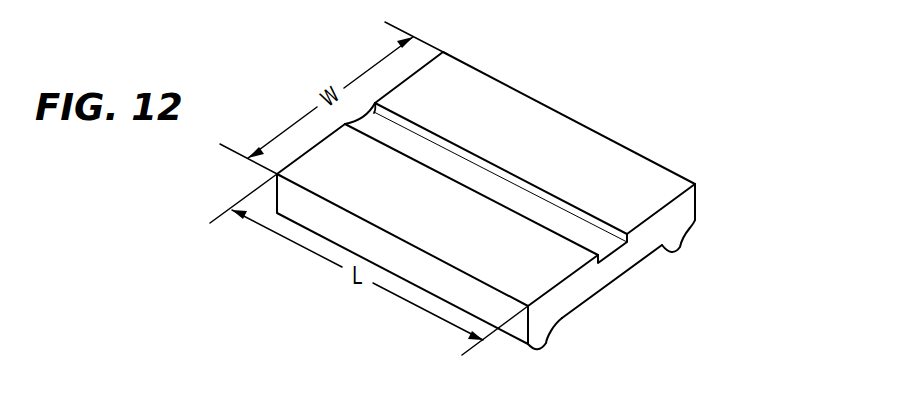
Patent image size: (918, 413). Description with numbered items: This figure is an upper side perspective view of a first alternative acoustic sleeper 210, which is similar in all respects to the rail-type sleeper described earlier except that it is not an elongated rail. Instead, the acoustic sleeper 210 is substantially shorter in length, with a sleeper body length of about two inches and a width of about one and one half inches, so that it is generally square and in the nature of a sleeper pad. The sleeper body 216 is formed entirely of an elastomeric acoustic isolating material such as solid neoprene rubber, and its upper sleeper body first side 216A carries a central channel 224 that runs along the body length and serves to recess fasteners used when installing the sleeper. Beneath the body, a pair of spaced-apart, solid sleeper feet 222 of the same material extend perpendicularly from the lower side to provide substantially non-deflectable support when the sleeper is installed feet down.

The acoustic sleeper 210 is at (616, 80).
The sleeper body 216 is at (663, 164).
The sleeper body first side 216A is at (490, 105).
The sleeper feet 222 is at (677, 246).
The central channel 224 is at (608, 252).